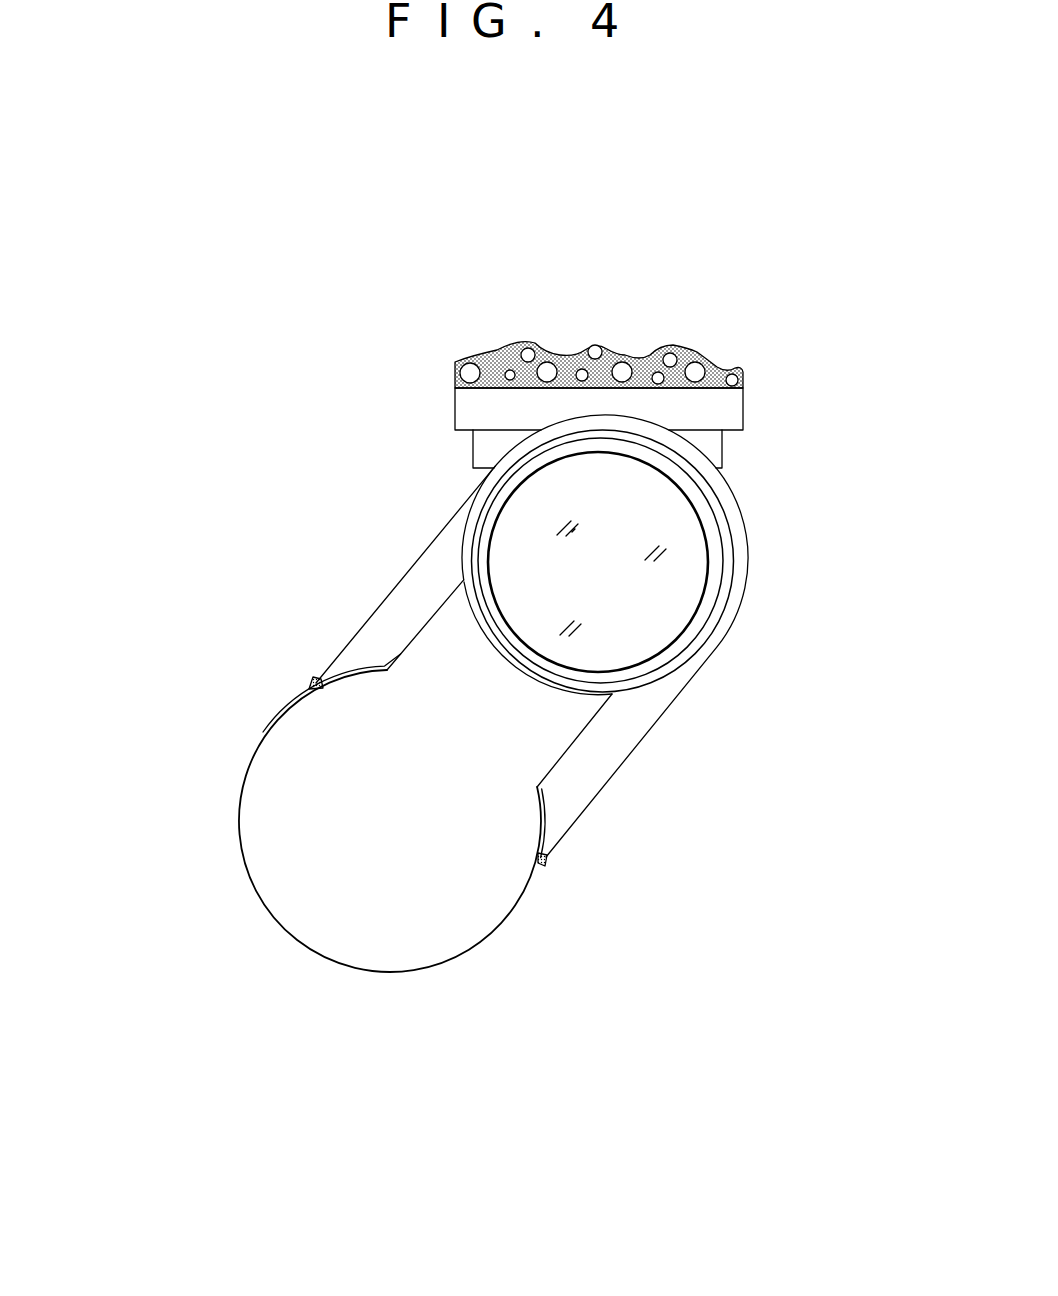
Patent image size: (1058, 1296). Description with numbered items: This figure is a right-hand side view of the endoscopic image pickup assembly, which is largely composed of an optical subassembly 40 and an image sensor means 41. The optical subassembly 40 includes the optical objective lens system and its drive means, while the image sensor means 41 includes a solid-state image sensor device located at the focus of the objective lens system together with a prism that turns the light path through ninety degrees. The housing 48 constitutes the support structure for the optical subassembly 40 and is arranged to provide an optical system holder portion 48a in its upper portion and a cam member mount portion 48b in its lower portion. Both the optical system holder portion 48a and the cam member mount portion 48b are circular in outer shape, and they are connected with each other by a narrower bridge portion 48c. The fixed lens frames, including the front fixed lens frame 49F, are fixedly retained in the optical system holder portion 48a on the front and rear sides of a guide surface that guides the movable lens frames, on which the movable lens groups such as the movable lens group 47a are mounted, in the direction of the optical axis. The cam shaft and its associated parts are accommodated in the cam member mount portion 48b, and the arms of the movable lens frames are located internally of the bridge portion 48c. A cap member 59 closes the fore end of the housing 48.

The optical subassembly 40 is at (410, 526).
The image sensor means 41 is at (704, 405).
The movable lens group 47a is at (660, 600).
The housing 48 is at (257, 914).
The optical system holder portion 48a is at (558, 440).
The cam member mount portion 48b is at (503, 922).
The bridge portion 48c is at (417, 637).
The fixed lens frame 49F is at (709, 540).
The cap member 59 is at (362, 930).